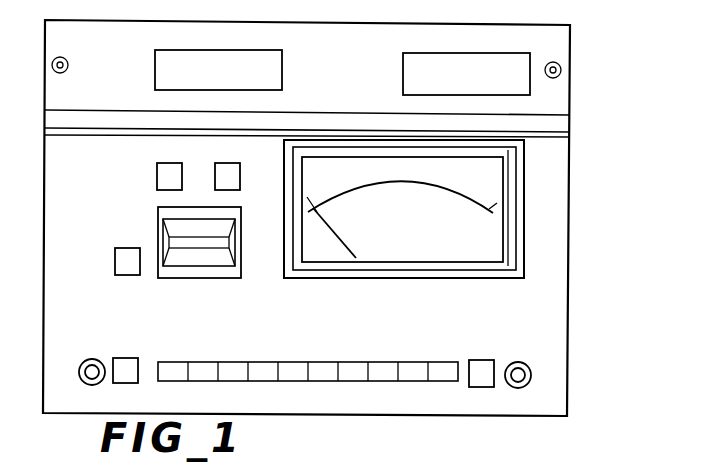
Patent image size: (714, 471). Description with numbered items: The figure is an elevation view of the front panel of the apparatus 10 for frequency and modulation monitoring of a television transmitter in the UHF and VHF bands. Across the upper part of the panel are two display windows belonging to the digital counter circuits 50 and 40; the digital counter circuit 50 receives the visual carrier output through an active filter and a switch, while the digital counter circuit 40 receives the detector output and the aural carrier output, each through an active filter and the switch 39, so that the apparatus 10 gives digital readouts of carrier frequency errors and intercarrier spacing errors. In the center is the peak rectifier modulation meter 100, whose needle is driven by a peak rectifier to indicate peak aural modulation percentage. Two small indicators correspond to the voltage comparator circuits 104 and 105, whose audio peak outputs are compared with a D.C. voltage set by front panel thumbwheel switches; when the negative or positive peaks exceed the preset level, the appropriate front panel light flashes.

The apparatus 10 is at (605, 172).
The digital counter circuit 50 is at (243, 82).
The digital counter circuit 40 is at (463, 88).
The voltage comparator circuit 104 is at (160, 171).
The voltage comparator circuit 105 is at (237, 158).
The peak rectifier modulation meter 100 is at (497, 237).
The switch 39 is at (308, 372).